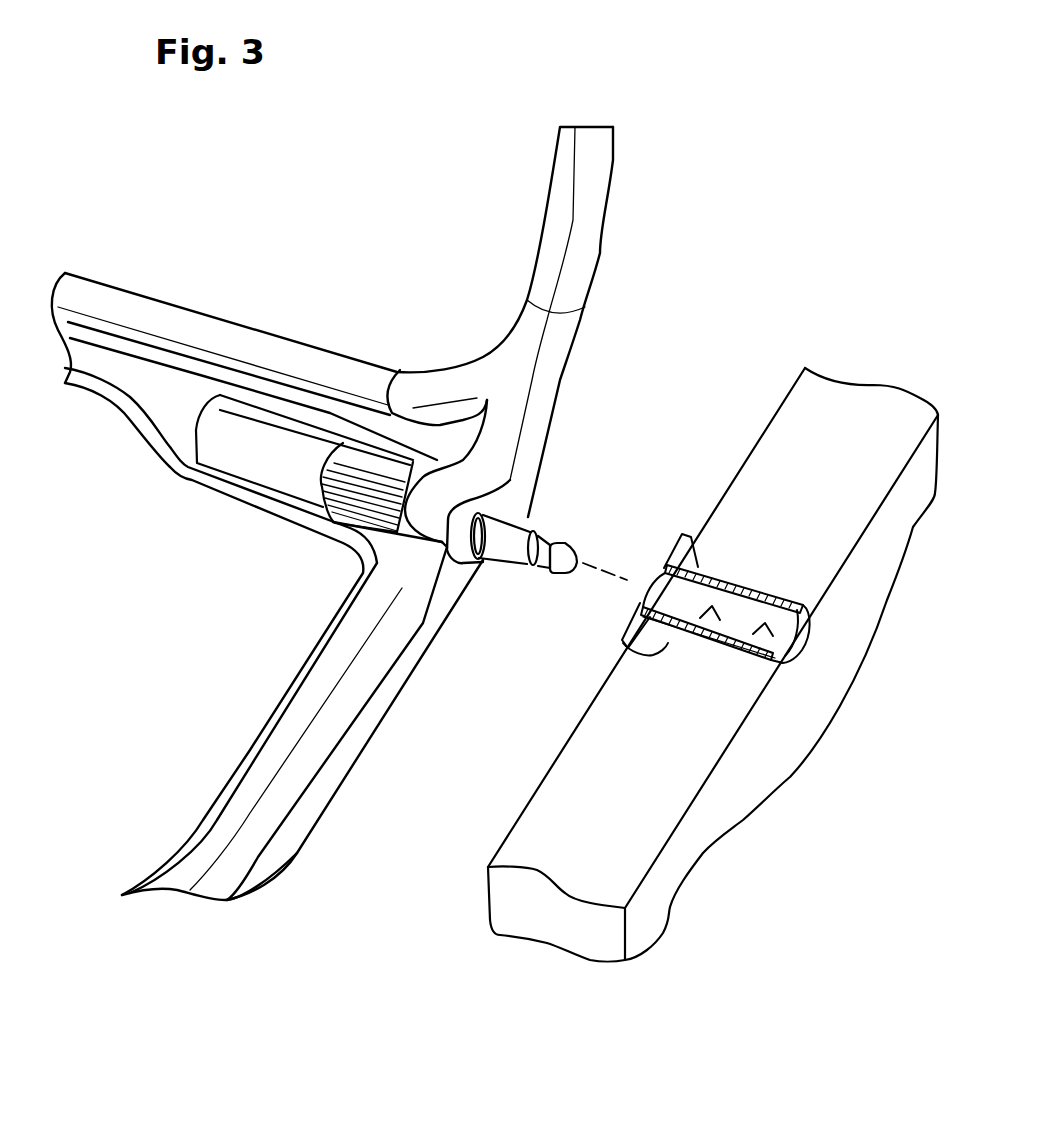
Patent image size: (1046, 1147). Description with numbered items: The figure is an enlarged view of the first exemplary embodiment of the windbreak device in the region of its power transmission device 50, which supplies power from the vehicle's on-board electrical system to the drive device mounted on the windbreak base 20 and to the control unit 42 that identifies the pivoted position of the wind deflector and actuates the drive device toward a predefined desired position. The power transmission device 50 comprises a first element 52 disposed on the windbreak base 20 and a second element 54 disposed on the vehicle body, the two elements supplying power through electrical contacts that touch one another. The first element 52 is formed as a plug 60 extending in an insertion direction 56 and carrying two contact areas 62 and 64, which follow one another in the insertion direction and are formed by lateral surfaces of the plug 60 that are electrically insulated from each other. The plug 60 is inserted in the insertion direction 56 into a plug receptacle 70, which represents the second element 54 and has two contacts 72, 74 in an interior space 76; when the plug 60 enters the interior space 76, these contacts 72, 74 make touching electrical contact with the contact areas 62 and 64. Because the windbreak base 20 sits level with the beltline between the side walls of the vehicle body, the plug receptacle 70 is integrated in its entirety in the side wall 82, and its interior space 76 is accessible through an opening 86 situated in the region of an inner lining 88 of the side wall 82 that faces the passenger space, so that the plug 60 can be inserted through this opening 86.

The windbreak base 20 is at (370, 668).
The control unit 42 is at (267, 445).
The power transmission device 50 is at (735, 514).
The first element 52 is at (542, 530).
The second element 54 is at (735, 574).
The insertion direction 56 is at (627, 580).
The plug 60 is at (570, 550).
The contact area 62 is at (513, 550).
The contact area 64 is at (557, 558).
The plug receptacle 70 is at (772, 601).
The contact 72 is at (708, 622).
The contact 74 is at (762, 640).
The interior space 76 is at (787, 638).
The side wall 82 is at (713, 665).
The opening 86 is at (645, 597).
The inner lining 88 is at (732, 483).